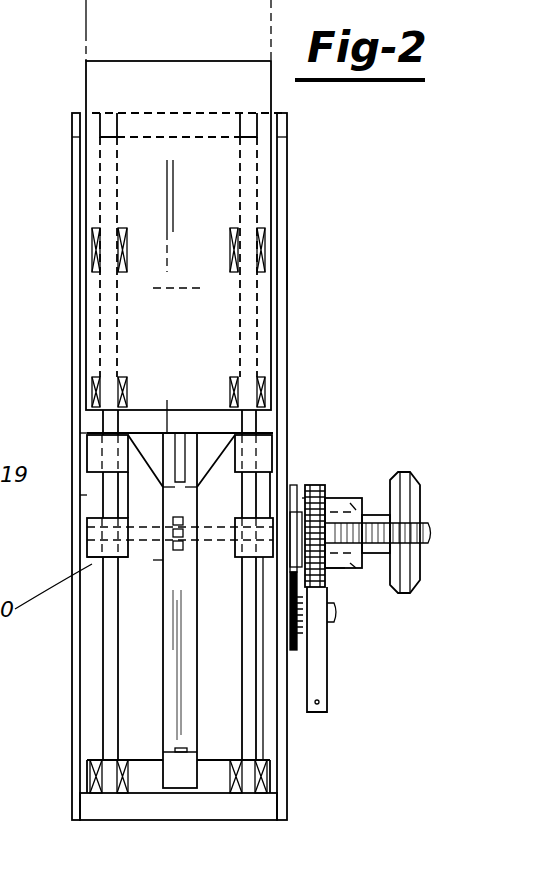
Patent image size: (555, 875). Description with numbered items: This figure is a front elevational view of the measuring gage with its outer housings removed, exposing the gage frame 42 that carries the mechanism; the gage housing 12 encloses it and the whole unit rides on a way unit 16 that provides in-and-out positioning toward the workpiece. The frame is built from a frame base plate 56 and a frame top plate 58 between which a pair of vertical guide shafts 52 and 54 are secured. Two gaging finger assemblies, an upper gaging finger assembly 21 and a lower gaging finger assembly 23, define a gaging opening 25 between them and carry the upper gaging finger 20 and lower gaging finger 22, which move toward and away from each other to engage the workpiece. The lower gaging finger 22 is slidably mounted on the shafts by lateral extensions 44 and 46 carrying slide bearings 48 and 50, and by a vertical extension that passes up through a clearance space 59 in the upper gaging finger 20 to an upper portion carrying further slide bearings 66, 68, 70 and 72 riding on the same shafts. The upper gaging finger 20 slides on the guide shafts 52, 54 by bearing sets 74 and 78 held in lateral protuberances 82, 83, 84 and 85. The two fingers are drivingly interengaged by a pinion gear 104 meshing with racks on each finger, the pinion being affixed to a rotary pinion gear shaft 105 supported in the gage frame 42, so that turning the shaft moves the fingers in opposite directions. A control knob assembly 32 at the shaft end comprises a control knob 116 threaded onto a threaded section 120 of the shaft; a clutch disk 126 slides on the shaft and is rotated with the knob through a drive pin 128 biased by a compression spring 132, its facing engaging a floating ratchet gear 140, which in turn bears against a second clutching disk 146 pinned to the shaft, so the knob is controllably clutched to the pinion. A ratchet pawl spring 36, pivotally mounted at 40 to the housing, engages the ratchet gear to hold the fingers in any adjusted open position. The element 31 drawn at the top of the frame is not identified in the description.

The gage housing 12 is at (292, 657).
The way unit 16 is at (259, 560).
The upper gaging finger 20 is at (161, 498).
The upper gaging finger assembly 21 is at (153, 566).
The lower gaging finger 22 is at (167, 775).
The lower gaging finger assembly 23 is at (101, 767).
The gaging opening 25 is at (182, 685).
The housing block 31 is at (86, 62).
The control knob assembly 32 is at (345, 492).
The ratchet pawl spring 36 is at (323, 690).
The pivot mounting 40 is at (333, 625).
The gage frame 42 is at (290, 265).
The lateral extension 44 is at (213, 760).
The lateral extension 46 is at (137, 760).
The slide bearing 48 is at (232, 778).
The bearing 50 is at (90, 782).
The vertical guide shaft 52 is at (242, 615).
The vertical guide shaft 54 is at (103, 615).
The frame base plate 56 is at (87, 820).
The frame top plate 58 is at (72, 113).
The clearance space 59 is at (166, 412).
The slide bearing 66 is at (262, 252).
The slide bearing 68 is at (262, 394).
The slide bearing 70 is at (92, 250).
The slide bearing 72 is at (92, 394).
The bearing set 74 is at (262, 437).
The bearing set 78 is at (87, 452).
The lateral protuberance 82 is at (272, 470).
The lateral protuberance 83 is at (273, 515).
The lateral protuberance 84 is at (87, 433).
The lateral protuberance 85 is at (97, 557).
The pinion gear 104 is at (200, 520).
The rotary pinion gear shaft 105 is at (87, 535).
The control knob 116 is at (417, 483).
The threaded section 120 is at (430, 539).
The clutch disk 126 is at (332, 573).
The drive pin 128 is at (357, 570).
The compression spring 132 is at (360, 497).
The ratchet gear 140 is at (336, 482).
The second clutching disk 146 is at (292, 510).